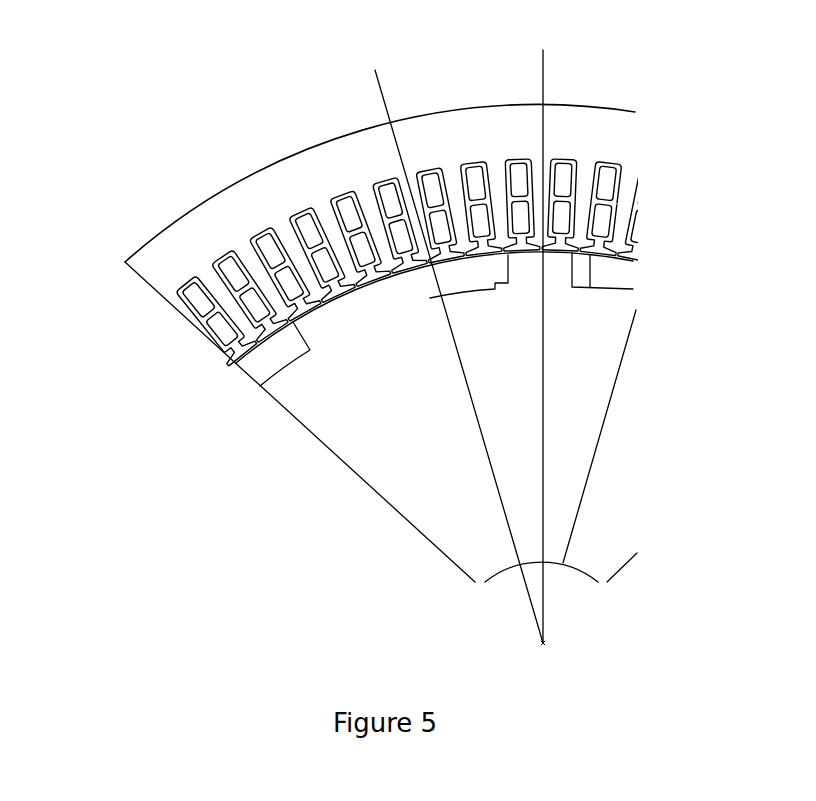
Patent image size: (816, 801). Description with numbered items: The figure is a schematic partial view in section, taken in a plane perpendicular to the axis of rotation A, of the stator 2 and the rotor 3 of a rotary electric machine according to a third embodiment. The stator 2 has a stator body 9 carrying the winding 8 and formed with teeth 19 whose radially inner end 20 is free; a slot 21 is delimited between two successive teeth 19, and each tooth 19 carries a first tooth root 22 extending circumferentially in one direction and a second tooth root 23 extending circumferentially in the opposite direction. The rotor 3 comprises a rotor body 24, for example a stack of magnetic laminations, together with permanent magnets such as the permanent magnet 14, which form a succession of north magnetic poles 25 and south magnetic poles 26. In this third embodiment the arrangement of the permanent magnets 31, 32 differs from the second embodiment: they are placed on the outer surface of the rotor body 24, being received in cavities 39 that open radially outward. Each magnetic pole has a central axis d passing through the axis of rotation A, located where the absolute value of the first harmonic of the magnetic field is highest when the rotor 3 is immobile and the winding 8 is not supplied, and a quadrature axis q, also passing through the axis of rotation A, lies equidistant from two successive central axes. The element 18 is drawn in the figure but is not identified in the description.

The stator 2 is at (130, 219).
The rotor 3 is at (374, 559).
The winding 8 is at (273, 247).
The stator body 9 is at (192, 222).
The permanent magnet 14 is at (387, 327).
The slot region 18 is at (468, 345).
The tooth 19 is at (590, 175).
The radially inner end 20 is at (580, 250).
The slot 21 is at (612, 203).
The first tooth root 22 is at (568, 238).
The second tooth root 23 is at (590, 272).
The rotor body 24 is at (403, 480).
The north magnetic pole 25 is at (438, 267).
The south magnetic pole 26 is at (253, 365).
The permanent magnet 31 is at (470, 272).
The permanent magnet 32 is at (268, 370).
The cavity 39 is at (497, 283).
The central axis d is at (388, 100).
The quadrature axis q is at (545, 72).
The axis of rotation A is at (543, 643).